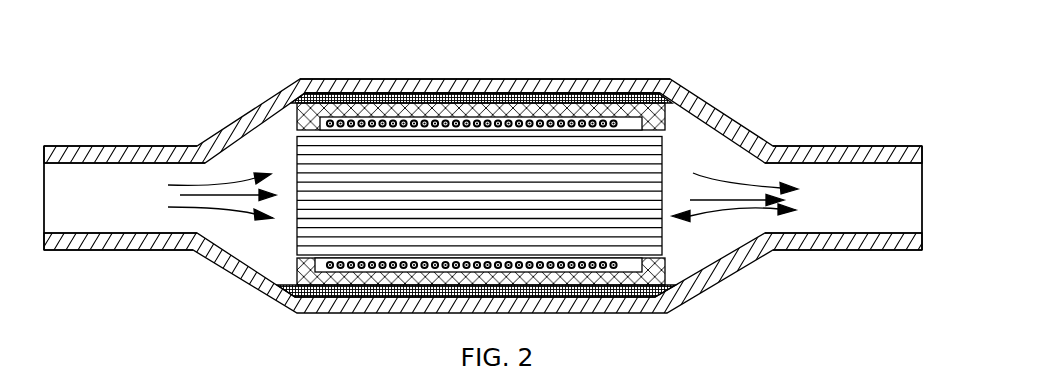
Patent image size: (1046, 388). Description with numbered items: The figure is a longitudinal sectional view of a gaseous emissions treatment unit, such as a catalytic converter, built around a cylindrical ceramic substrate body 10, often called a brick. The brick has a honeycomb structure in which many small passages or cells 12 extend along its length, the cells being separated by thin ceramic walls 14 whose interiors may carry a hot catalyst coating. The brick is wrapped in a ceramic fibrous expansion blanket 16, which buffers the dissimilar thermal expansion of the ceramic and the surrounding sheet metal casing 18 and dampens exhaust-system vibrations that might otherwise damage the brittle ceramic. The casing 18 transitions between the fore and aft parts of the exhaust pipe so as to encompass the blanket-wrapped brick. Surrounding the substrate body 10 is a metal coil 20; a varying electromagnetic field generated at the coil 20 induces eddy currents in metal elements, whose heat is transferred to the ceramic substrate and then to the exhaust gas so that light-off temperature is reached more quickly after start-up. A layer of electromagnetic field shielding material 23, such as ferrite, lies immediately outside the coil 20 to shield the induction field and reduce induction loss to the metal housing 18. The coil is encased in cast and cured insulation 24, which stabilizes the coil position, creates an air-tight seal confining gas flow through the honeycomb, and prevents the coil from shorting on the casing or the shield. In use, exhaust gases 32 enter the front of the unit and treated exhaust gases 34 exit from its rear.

The substrate body 10 is at (583, 128).
The cells 12 is at (663, 162).
The walls 14 is at (341, 163).
The expansion blanket 16 is at (502, 90).
The casing 18 is at (462, 82).
The metal coil 20 is at (548, 120).
The electromagnetic field shielding layer 23 is at (423, 113).
The insulation 24 is at (392, 100).
The exhaust gases 32 is at (217, 197).
The treated exhaust gases 34 is at (758, 198).